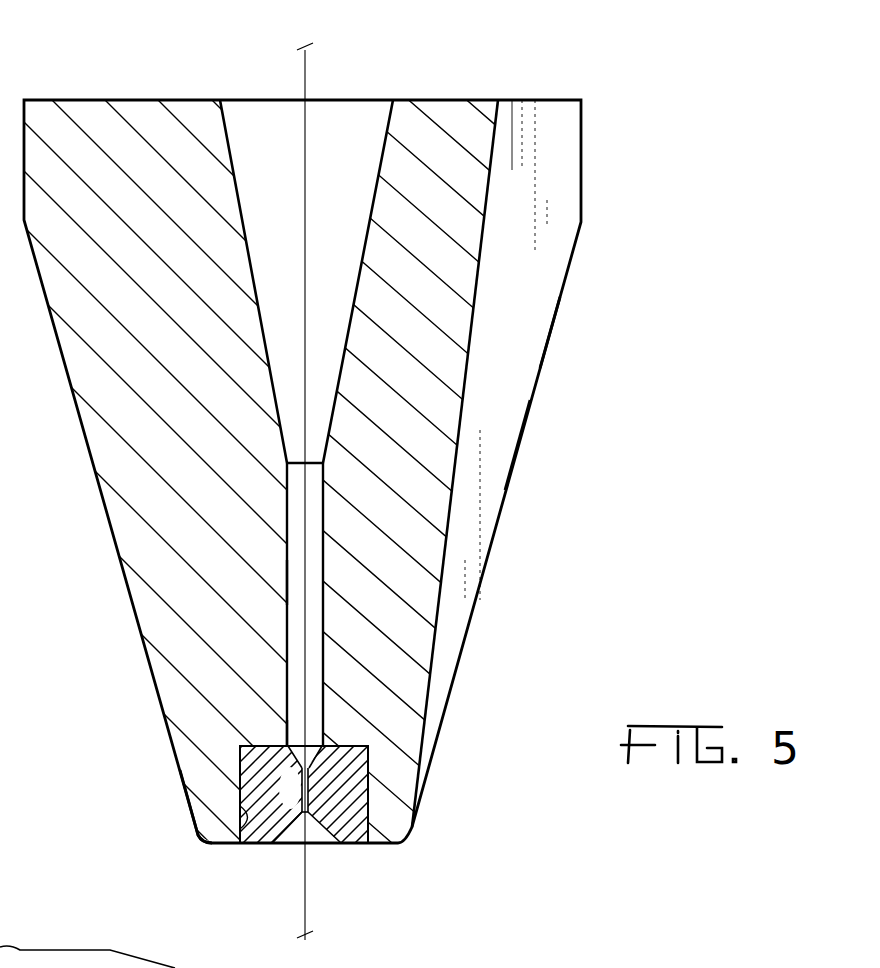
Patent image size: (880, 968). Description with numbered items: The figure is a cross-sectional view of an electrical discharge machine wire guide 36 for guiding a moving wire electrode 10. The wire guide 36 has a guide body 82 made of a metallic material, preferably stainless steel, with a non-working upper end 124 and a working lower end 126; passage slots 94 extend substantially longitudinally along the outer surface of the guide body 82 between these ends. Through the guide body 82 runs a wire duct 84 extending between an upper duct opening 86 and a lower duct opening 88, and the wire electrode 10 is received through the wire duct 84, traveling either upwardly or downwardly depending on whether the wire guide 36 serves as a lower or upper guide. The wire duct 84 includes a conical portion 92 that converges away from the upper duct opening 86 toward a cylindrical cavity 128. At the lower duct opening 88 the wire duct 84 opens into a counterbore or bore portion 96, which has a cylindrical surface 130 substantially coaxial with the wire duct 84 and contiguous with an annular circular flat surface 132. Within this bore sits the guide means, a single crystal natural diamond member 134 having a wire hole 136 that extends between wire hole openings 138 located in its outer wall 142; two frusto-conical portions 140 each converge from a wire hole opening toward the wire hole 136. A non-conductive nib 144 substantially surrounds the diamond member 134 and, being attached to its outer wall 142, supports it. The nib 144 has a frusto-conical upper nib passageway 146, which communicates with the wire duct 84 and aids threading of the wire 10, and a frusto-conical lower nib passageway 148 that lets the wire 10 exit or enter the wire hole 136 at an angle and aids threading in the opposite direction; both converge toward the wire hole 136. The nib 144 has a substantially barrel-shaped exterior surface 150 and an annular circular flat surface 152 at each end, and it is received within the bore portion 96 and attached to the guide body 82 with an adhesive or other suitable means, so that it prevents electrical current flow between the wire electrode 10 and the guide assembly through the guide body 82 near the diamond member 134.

The wire electrode 10 is at (305, 70).
The wire guide 36 is at (525, 489).
The guide body 82 is at (552, 380).
The wire duct 84 is at (324, 499).
The upper duct opening 86 is at (355, 91).
The lower duct opening 88 is at (278, 724).
The conical portion 92 is at (248, 135).
The passage slots 94 is at (540, 150).
The bore portion 96 is at (320, 860).
The upper end 124 is at (474, 92).
The lower end 126 is at (177, 852).
The cylindrical cavity 128 is at (286, 582).
The cylindrical surface 130 is at (244, 846).
The annular circular flat surface 132 is at (372, 758).
The single crystal natural diamond member 134 is at (325, 793).
The wire hole 136 is at (313, 811).
The wire hole openings 138 is at (300, 752).
The frusto-conical portions 140 is at (322, 781).
The outer wall 142 is at (282, 770).
The nib 144 is at (386, 765).
The upper nib passageway 146 is at (328, 745).
The lower nib passageway 148 is at (292, 832).
The barrel-shaped exterior surface 150 is at (240, 792).
The annular circular flat surface 152 is at (268, 745).